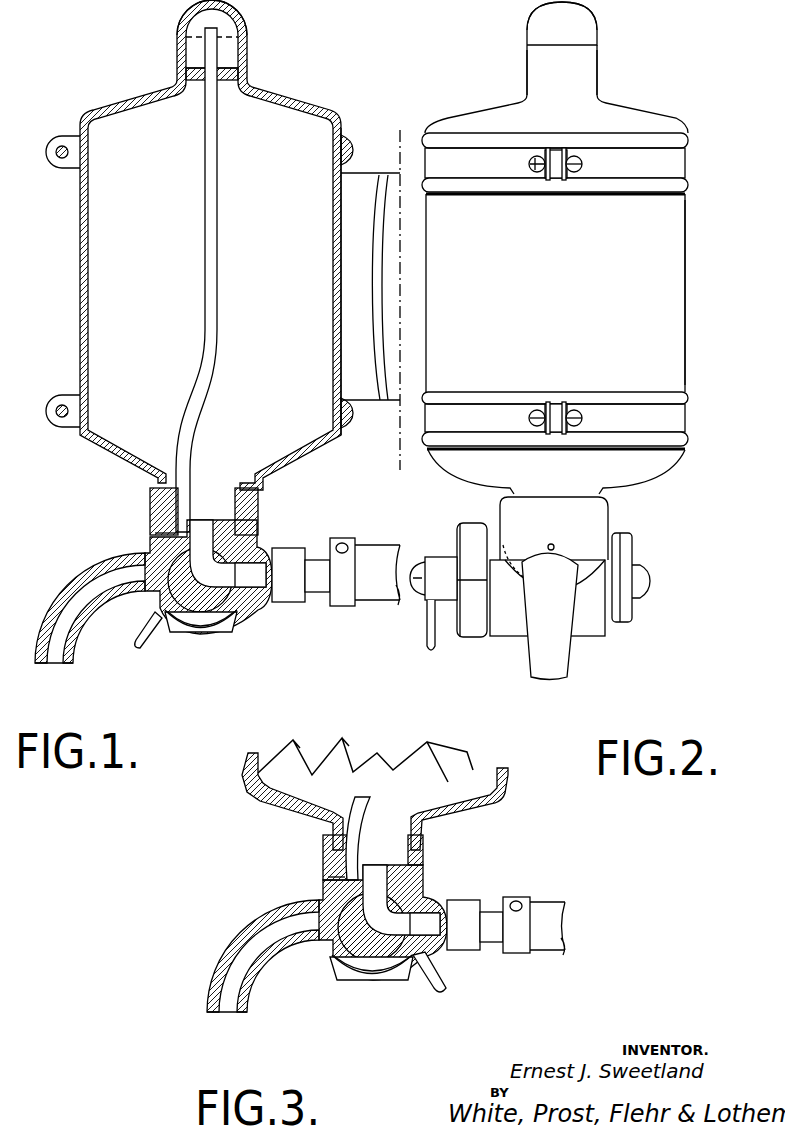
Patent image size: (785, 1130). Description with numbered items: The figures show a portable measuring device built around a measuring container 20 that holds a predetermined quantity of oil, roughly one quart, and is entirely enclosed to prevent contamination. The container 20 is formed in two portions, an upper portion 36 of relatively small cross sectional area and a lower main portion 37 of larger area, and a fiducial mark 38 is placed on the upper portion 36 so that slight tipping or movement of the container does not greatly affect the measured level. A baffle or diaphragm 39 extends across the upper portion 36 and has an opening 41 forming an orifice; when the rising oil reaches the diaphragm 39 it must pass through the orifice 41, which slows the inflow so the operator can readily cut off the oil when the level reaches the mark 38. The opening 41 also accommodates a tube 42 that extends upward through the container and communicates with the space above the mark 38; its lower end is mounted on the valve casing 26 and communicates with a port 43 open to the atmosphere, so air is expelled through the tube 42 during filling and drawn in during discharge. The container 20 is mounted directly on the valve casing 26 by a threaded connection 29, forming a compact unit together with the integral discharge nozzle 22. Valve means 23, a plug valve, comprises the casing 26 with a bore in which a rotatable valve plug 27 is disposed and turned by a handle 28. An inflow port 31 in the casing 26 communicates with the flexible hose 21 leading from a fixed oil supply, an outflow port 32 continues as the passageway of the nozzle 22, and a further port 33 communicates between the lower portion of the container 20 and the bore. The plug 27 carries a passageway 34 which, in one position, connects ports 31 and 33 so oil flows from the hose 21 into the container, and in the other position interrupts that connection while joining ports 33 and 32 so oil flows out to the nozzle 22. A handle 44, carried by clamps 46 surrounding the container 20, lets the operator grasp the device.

In FIG. 1, the measuring container 20 is at (290, 106).
In FIG. 2, the measuring container 20 is at (668, 252).
In FIG. 3, the measuring container 20 is at (505, 800).
In FIG. 1, the flexible hose 21 is at (373, 566).
In FIG. 2, the flexible hose 21 is at (530, 580).
In FIG. 3, the flexible hose 21 is at (551, 907).
In FIG. 1, the discharge nozzle 22 is at (54, 607).
In FIG. 2, the discharge nozzle 22 is at (560, 660).
In FIG. 3, the discharge nozzle 22 is at (218, 977).
In FIG. 1, the valve means 23 is at (222, 632).
In FIG. 2, the valve means 23 is at (597, 618).
In FIG. 3, the valve means 23 is at (367, 980).
In FIG. 1, the valve casing 26 is at (247, 522).
In FIG. 2, the valve casing 26 is at (595, 530).
In FIG. 3, the valve casing 26 is at (413, 883).
In FIG. 1, the valve plug 27 is at (196, 628).
In FIG. 3, the valve plug 27 is at (342, 970).
In FIG. 1, the handle 28 is at (141, 630).
In FIG. 2, the handle 28 is at (428, 636).
In FIG. 3, the handle 28 is at (438, 978).
In FIG. 1, the threaded connection 29 is at (253, 494).
In FIG. 3, the threaded connection 29 is at (425, 845).
In FIG. 1, the inflow port 31 is at (253, 590).
In FIG. 3, the inflow port 31 is at (437, 943).
In FIG. 1, the outflow port 32 is at (157, 570).
In FIG. 3, the outflow port 32 is at (288, 925).
In FIG. 1, the port 33 is at (205, 522).
In FIG. 3, the port 33 is at (389, 875).
In FIG. 1, the plug passageway 34 is at (214, 562).
In FIG. 3, the plug passageway 34 is at (363, 940).
In FIG. 1, the upper container portion 36 is at (230, 53).
In FIG. 2, the upper container portion 36 is at (535, 78).
In FIG. 1, the lower main container portion 37 is at (312, 239).
In FIG. 2, the lower main container portion 37 is at (686, 320).
In FIG. 1, the fiducial mark 38 is at (230, 34).
In FIG. 2, the fiducial mark 38 is at (534, 46).
In FIG. 1, the diaphragm 39 is at (186, 71).
In FIG. 1, the opening 41 is at (233, 78).
In FIG. 1, the tube 42 is at (208, 235).
In FIG. 3, the tube 42 is at (360, 817).
In FIG. 1, the port 43 is at (153, 534).
In FIG. 2, the port 43 is at (558, 538).
In FIG. 3, the port 43 is at (333, 880).
In FIG. 1, the handle 44 is at (384, 338).
In FIG. 1, the clamps 46 is at (346, 148).
In FIG. 2, the clamps 46 is at (561, 176).